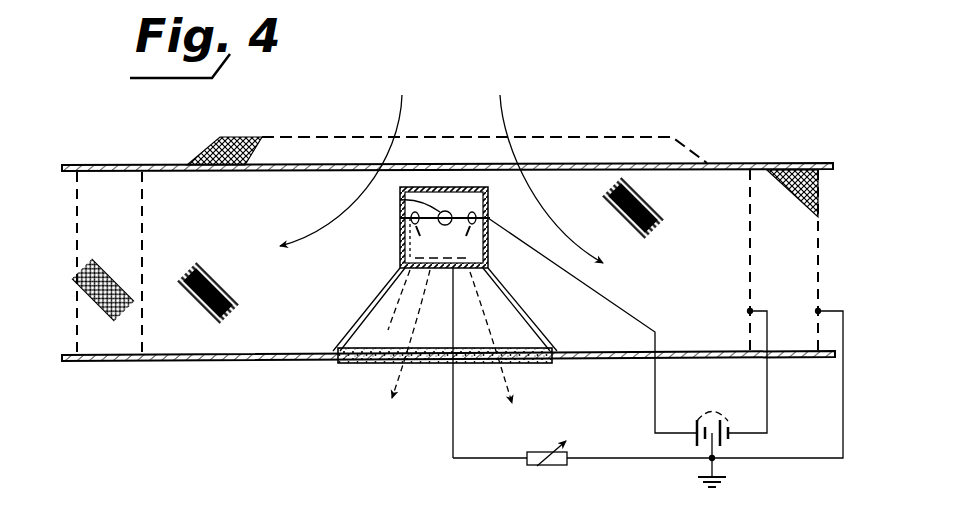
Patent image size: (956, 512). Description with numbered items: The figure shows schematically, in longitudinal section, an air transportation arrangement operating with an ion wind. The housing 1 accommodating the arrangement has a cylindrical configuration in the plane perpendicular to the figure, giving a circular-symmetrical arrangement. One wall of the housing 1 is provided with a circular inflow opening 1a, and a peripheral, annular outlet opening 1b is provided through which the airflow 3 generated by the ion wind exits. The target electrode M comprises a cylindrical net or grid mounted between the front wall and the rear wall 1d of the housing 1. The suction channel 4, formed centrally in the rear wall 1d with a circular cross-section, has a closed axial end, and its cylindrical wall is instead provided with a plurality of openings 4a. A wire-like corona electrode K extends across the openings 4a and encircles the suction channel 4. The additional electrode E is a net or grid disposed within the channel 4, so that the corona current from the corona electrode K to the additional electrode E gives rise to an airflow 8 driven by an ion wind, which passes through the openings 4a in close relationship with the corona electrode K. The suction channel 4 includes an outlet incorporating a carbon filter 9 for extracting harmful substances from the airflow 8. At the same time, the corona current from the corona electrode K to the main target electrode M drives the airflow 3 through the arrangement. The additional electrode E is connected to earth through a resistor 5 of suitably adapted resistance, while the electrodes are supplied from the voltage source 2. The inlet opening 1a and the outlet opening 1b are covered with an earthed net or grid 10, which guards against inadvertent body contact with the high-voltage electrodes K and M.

The housing 1 is at (733, 162).
The inflow opening 1a is at (612, 163).
The outlet opening 1b is at (78, 263).
The rear wall 1d is at (620, 359).
The voltage source 2 is at (648, 398).
The airflow 3 is at (500, 99).
The suction channel 4 is at (400, 246).
The openings 4a is at (400, 200).
The resistor 5 is at (537, 452).
The airflow 8 is at (476, 293).
The carbon filter 9 is at (372, 363).
The earthed net or grid 10 is at (77, 195).
The target electrode M is at (143, 190).
The corona electrode K is at (490, 218).
The additional electrode E is at (470, 258).